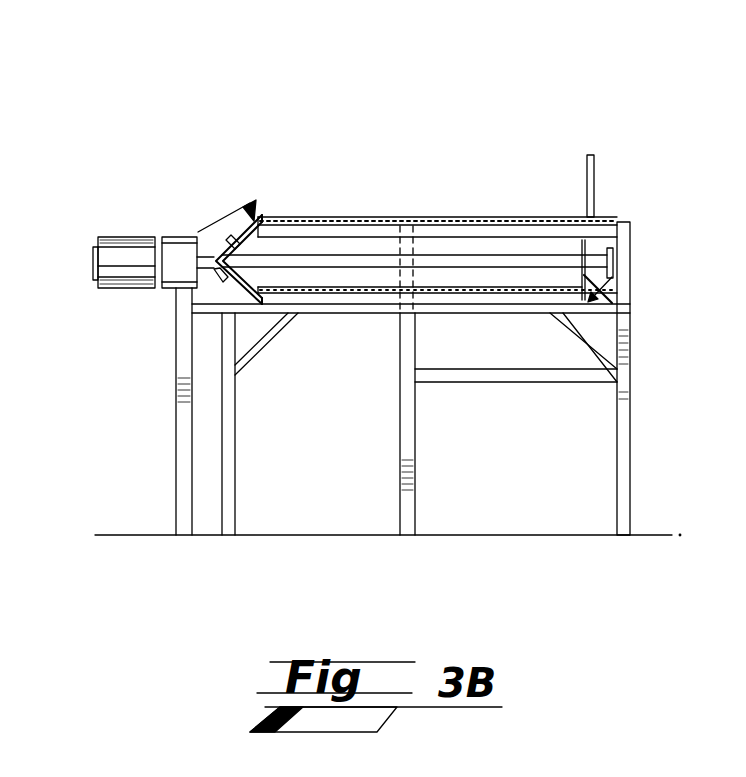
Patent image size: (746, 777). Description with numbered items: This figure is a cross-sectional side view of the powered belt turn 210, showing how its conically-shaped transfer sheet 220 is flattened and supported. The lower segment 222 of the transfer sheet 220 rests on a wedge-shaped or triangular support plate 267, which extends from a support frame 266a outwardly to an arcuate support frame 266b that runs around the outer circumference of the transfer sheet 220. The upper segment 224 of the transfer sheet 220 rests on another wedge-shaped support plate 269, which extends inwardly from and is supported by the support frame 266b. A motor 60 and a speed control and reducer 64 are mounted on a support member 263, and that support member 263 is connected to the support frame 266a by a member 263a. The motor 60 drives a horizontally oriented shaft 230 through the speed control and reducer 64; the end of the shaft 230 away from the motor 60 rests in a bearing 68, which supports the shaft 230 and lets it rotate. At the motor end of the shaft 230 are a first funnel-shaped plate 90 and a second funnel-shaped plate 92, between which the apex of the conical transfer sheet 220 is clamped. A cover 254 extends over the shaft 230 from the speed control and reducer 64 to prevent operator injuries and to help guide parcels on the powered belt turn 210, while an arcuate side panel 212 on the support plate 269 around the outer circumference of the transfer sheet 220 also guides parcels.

The motor 60 is at (107, 247).
The speed control and reducer 64 is at (172, 256).
The bearing 68 is at (613, 267).
The first funnel-shaped plate 90 is at (213, 258).
The second funnel-shaped plate 92 is at (252, 220).
The powered belt turn 210 is at (433, 75).
The side panel 212 is at (594, 157).
The transfer sheet 220 is at (408, 224).
The lower segment 222 is at (483, 214).
The upper segment 224 is at (625, 298).
The shaft 230 is at (300, 257).
The cover 254 is at (247, 213).
The support member 263 is at (175, 458).
The member 263a is at (193, 333).
The support frame 266a is at (230, 413).
The arcuate support frame 266b is at (620, 417).
The support plate 267 is at (318, 313).
The support plate 269 is at (602, 230).